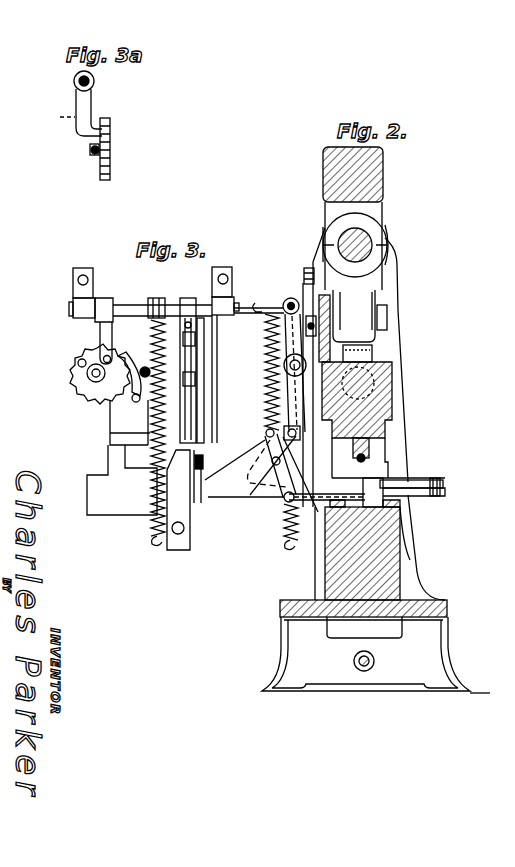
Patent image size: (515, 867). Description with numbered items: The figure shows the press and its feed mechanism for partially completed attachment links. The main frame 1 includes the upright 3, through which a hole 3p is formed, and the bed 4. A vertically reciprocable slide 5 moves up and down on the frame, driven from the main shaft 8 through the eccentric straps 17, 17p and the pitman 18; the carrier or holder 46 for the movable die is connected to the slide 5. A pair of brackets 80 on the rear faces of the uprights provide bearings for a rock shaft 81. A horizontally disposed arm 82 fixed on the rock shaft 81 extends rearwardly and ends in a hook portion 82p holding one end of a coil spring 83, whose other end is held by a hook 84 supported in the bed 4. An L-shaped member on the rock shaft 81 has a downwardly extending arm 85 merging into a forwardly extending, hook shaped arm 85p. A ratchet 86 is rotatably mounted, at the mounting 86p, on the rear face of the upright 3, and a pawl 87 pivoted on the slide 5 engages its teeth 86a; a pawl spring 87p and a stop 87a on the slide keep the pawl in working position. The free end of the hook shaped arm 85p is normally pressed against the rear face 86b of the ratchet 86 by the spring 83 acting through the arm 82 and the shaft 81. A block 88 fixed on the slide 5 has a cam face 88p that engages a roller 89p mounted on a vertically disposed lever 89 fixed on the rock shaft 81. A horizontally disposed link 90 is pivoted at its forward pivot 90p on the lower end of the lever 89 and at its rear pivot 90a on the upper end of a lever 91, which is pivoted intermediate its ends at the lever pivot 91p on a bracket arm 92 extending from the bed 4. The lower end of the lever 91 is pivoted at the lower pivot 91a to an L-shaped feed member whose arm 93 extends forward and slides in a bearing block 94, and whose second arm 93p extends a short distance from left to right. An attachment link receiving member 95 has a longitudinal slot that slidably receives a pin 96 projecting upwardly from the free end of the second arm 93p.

In FIG. 2, the main frame 1 is at (417, 584).
In FIG. 2, the upright 3 is at (398, 422).
In FIG. 2, the hole in standard 3p is at (388, 473).
In FIG. 2, the bed 4 is at (387, 608).
In FIG. 2, the vertically reciprocable slide 5 is at (386, 387).
In FIG. 2, the main shaft 8 is at (362, 243).
In FIG. 2, the eccentric strap 17 is at (366, 228).
In FIG. 2, the eccentric strap 17p is at (385, 262).
In FIG. 2, the pitman 18 is at (366, 353).
In FIG. 2, the carrier or holder for the movable die 46 is at (372, 448).
In FIG. 3, the brackets 80 is at (78, 270).
In FIG. 3, the rock shaft 81 is at (128, 305).
In FIG. 3, the horizontally disposed arm 82 is at (158, 300).
In FIG. 3, the hook portion 82p is at (150, 318).
In FIG. 3, the coil spring 83 is at (150, 430).
In FIG. 3, the hook 84 is at (155, 546).
In FIG. 3A, the vertically disposed arm 85 is at (74, 112).
In FIG. 3, the vertically disposed arm 85 is at (100, 333).
In FIG. 3A, the hook shaped arm 85p is at (84, 140).
In FIG. 3, the hook shaped arm 85p is at (104, 355).
In FIG. 3A, the ratchet 86 is at (111, 157).
In FIG. 3, the ratchet 86 is at (96, 400).
In FIG. 3A, the ratchet teeth 86a is at (104, 118).
In FIG. 3, the ratchet teeth 86a is at (78, 362).
In FIG. 3A, the rear face of ratchet 86b is at (108, 168).
In FIG. 3, the rear face of ratchet 86b is at (92, 376).
In FIG. 3A, the ratchet mounting 86p is at (112, 147).
In FIG. 3, the ratchet mounting 86p is at (85, 390).
In FIG. 3, the pawl 87 is at (140, 405).
In FIG. 3, the stop 87a is at (140, 410).
In FIG. 3, the pawl spring 87p is at (144, 367).
In FIG. 3, the block 88 is at (300, 341).
In FIG. 2, the cam face 88p is at (315, 352).
In FIG. 3, the vertically disposed lever 89 is at (188, 300).
In FIG. 3, the roller 89p is at (283, 367).
In FIG. 3, the horizontally disposed link 90 is at (200, 440).
In FIG. 3, the link rear pivot 90a is at (266, 437).
In FIG. 3, the link forward pivot 90p is at (318, 435).
In FIG. 3, the lever 91 is at (262, 478).
In FIG. 3, the lever pivot 91p is at (272, 461).
In FIG. 3, the lower pivot of lever 91a is at (284, 500).
In FIG. 3, the bracket arm 92 is at (186, 552).
In FIG. 3, the feed member arm 93 is at (362, 470).
In FIG. 2, the feed member arm 93p is at (445, 495).
In FIG. 2, the bearing block 94 is at (400, 530).
In FIG. 2, the attachment link receiving member 95 is at (430, 481).
In FIG. 2, the pin 96 is at (442, 487).